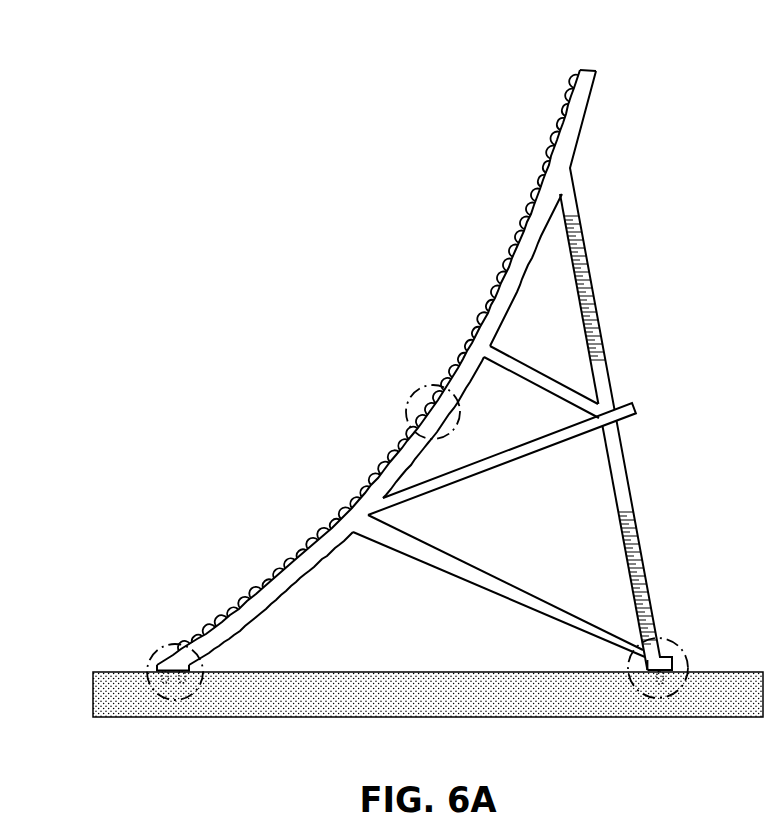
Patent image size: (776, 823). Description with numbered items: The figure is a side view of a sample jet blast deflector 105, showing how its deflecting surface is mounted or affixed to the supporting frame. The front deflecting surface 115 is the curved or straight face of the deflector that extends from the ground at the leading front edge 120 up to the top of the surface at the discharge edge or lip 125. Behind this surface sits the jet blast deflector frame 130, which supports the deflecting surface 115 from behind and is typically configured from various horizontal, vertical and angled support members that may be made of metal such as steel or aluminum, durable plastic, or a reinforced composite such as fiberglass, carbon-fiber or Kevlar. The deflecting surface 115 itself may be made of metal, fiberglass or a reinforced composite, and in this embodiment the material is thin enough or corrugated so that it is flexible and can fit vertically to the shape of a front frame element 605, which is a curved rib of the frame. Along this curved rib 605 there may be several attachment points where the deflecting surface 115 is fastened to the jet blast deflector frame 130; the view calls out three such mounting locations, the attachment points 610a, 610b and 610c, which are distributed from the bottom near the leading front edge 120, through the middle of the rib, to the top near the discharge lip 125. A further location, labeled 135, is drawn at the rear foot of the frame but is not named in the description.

The jet blast deflector 105 is at (266, 242).
The front deflecting surface 115 is at (338, 514).
The discharge edge or lip 125 is at (574, 86).
The front frame element 605 is at (308, 558).
The leading front edge 120 is at (156, 663).
The rear foot 135 is at (678, 648).
The jet blast deflector frame 130 is at (567, 630).
The attachment point 610a is at (148, 664).
The attachment point 610b is at (412, 395).
The attachment point 610c is at (598, 83).